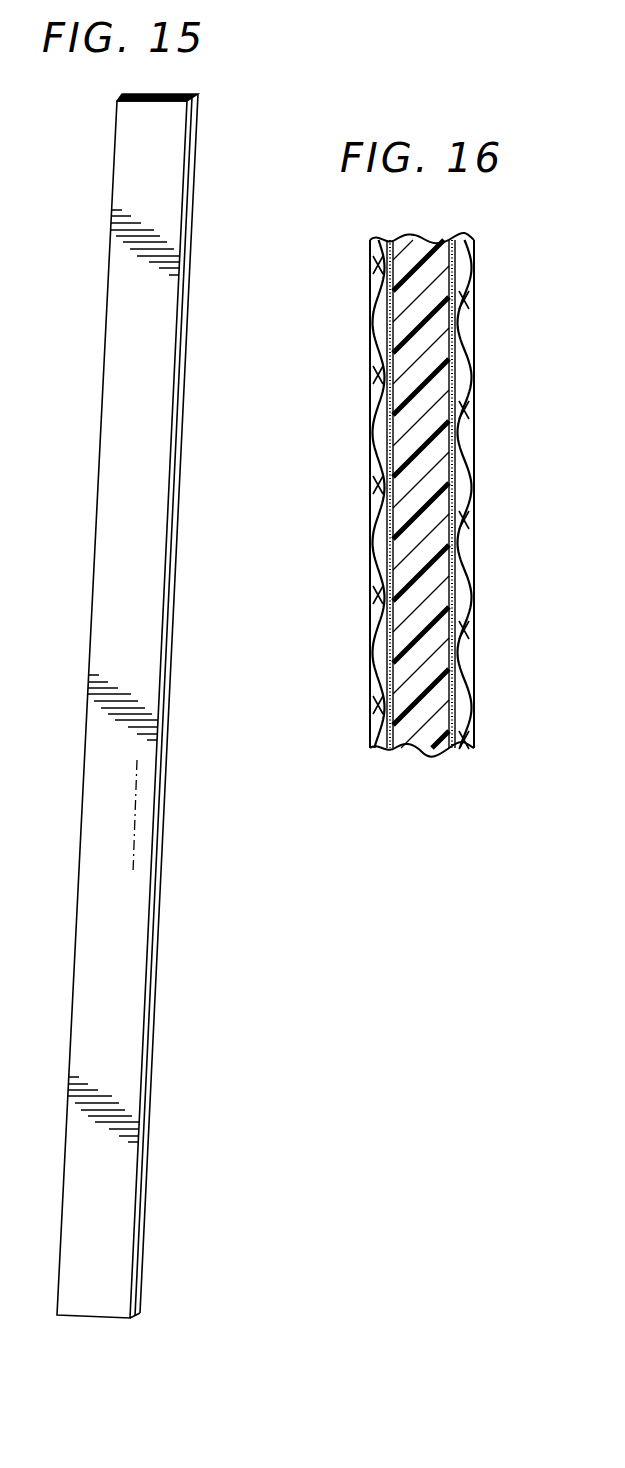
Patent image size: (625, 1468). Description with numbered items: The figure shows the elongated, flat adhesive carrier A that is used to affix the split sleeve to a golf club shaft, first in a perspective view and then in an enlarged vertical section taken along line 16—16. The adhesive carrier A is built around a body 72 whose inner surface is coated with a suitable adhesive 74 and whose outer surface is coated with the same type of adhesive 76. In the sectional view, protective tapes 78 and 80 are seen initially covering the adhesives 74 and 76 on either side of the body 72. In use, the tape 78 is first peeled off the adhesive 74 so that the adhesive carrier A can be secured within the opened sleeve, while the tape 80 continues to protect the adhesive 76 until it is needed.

In FIG. 15, the adhesive carrier A is at (106, 392).
In FIG. 16, the adhesive carrier A is at (370, 437).
In FIG. 15, the section line 16 is at (133, 863).
In FIG. 16, the body 72 is at (425, 740).
In FIG. 16, the adhesive 74 is at (374, 341).
In FIG. 16, the adhesive 76 is at (456, 392).
In FIG. 16, the protective tape 78 is at (375, 305).
In FIG. 16, the protective tape 80 is at (470, 319).